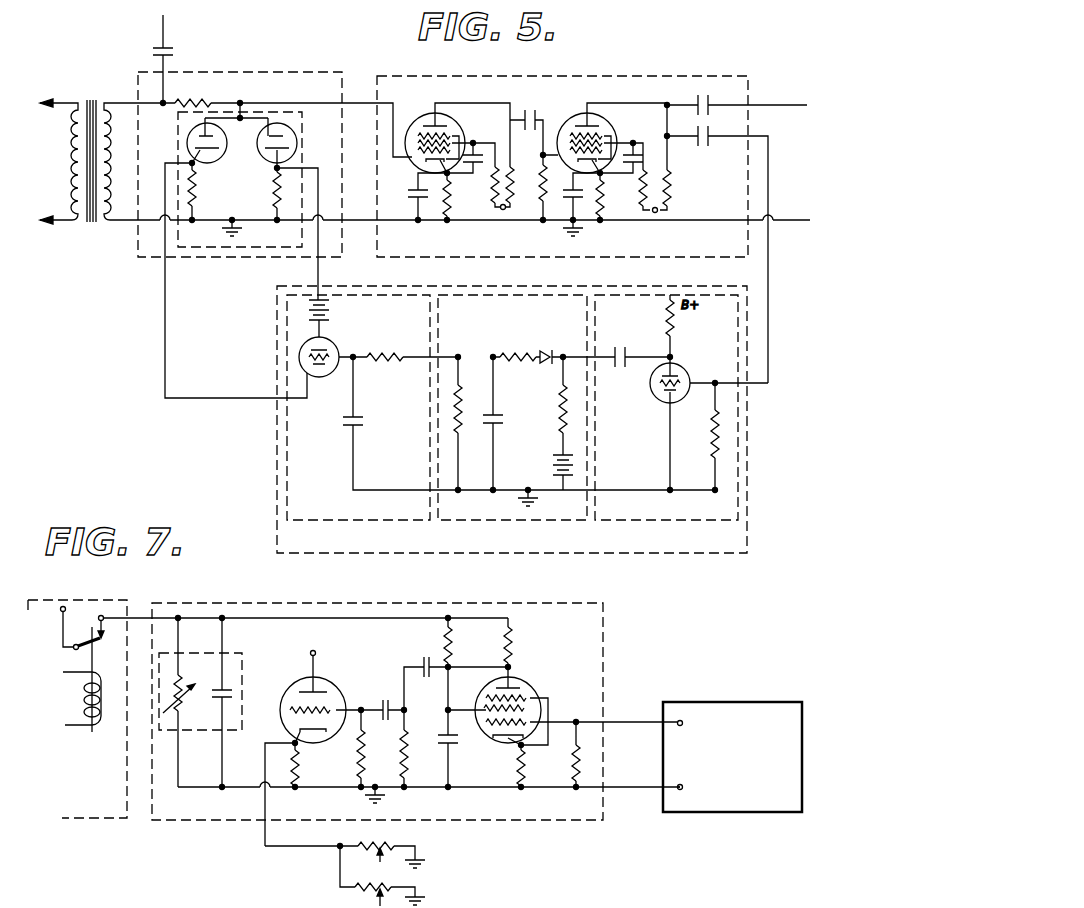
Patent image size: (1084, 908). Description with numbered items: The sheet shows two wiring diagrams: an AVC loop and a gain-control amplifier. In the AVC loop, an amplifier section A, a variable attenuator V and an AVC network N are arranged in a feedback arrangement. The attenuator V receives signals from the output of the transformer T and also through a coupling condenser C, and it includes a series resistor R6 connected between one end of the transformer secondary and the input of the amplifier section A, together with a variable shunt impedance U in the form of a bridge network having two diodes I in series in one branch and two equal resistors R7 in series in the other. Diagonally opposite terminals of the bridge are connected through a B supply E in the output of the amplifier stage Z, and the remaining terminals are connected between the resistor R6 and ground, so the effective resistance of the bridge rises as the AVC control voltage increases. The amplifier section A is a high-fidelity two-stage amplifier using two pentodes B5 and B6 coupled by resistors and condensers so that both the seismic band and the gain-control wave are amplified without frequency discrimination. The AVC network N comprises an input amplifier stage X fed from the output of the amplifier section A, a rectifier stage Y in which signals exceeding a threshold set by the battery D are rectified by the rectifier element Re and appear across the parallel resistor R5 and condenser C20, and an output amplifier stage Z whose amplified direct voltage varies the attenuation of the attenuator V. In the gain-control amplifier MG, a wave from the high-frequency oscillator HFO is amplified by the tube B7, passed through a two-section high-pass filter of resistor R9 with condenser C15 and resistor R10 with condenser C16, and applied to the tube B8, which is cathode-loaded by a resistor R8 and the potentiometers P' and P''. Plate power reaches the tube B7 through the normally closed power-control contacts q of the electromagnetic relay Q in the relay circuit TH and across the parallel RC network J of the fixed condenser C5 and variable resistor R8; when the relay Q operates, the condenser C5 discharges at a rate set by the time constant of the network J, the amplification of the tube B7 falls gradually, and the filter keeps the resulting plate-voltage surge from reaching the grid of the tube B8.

In FIG. 5, the transformer T is at (100, 86).
In FIG. 5, the coupling condenser C is at (174, 48).
In FIG. 5, the series resistor R6 is at (207, 100).
In FIG. 5, the variable attenuator V is at (324, 50).
In FIG. 5, the variable shunt impedance U is at (302, 139).
In FIG. 5, the diodes I is at (248, 169).
In FIG. 5, the equal resistors R7 is at (271, 200).
In FIG. 5, the amplifier section A is at (608, 75).
In FIG. 5, the pentode B5 is at (447, 128).
In FIG. 5, the pentode B6 is at (599, 128).
In FIG. 5, the AVC network N is at (708, 290).
In FIG. 5, the output amplifier stage Z is at (360, 526).
In FIG. 5, the rectifier stage Y is at (510, 526).
In FIG. 5, the input amplifier stage X is at (656, 526).
In FIG. 5, the B supply E is at (334, 314).
In FIG. 5, the resistor R5 is at (462, 435).
In FIG. 5, the condenser C20 is at (497, 416).
In FIG. 5, the rectifier element Re is at (552, 346).
In FIG. 5, the battery D is at (551, 472).
In FIG. 7, the relay circuit TH is at (82, 598).
In FIG. 7, the power-control contacts q is at (94, 641).
In FIG. 7, the electromagnetic relay Q is at (70, 694).
In FIG. 7, the variable gain amplifier MG is at (582, 608).
In FIG. 7, the parallel RC network J is at (243, 672).
In FIG. 7, the variable resistor R8 is at (298, 766).
In FIG. 7, the fixed condenser C5 is at (216, 703).
In FIG. 7, the amplifying tube B8 is at (334, 686).
In FIG. 7, the condenser C16 is at (392, 700).
In FIG. 7, the resistor R10 is at (366, 758).
In FIG. 7, the resistor R9 is at (409, 743).
In FIG. 7, the condenser C15 is at (430, 655).
In FIG. 7, the amplifying tube B7 is at (535, 692).
In FIG. 7, the high-frequency oscillator HFO is at (727, 706).
In FIG. 7, the potentiometer P' is at (345, 846).
In FIG. 7, the potentiometer P'' is at (382, 876).